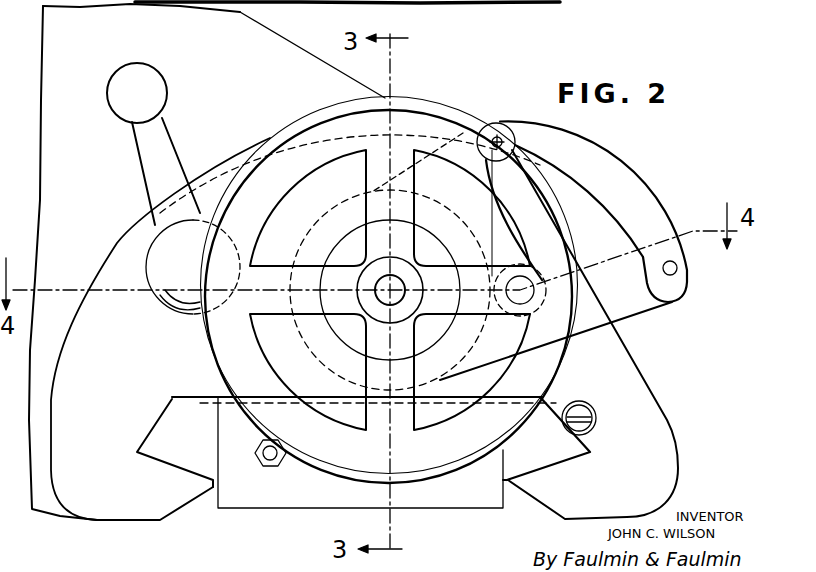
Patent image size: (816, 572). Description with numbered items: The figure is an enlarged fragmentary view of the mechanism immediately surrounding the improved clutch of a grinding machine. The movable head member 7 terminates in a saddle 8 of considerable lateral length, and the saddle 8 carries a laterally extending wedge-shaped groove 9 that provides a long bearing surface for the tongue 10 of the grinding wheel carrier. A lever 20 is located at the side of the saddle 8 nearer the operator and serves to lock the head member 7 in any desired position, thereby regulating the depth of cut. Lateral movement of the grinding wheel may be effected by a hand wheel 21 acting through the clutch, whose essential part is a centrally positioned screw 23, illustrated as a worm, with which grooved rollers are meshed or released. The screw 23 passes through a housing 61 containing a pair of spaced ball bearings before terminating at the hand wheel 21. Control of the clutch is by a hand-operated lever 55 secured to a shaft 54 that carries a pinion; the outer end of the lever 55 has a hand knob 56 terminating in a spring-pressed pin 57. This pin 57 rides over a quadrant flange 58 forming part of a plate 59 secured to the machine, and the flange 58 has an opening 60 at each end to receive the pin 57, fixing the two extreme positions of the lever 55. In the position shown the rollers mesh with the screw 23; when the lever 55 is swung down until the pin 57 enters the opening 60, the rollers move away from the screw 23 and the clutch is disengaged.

The head member 7 is at (268, 37).
The saddle 8 is at (660, 397).
The wedge-shaped groove 9 is at (547, 455).
The tongue 10 is at (255, 500).
The lever 20 is at (155, 130).
The hand wheel 21 is at (304, 128).
The screw 23 is at (368, 291).
The shaft 54 is at (570, 288).
The lever 55 is at (490, 207).
The hand knob 56 is at (505, 124).
The spring-pressed pin 57 is at (510, 143).
The quadrant flange 58 is at (597, 153).
The plate 59 is at (603, 314).
The opening 60 is at (677, 270).
The housing 61 is at (310, 350).